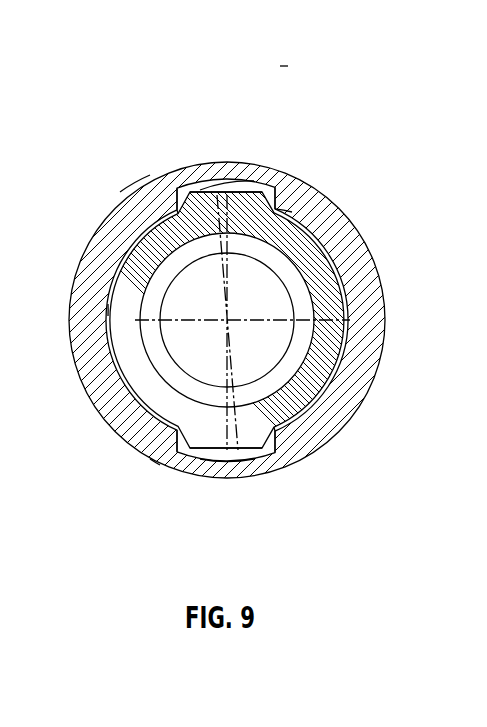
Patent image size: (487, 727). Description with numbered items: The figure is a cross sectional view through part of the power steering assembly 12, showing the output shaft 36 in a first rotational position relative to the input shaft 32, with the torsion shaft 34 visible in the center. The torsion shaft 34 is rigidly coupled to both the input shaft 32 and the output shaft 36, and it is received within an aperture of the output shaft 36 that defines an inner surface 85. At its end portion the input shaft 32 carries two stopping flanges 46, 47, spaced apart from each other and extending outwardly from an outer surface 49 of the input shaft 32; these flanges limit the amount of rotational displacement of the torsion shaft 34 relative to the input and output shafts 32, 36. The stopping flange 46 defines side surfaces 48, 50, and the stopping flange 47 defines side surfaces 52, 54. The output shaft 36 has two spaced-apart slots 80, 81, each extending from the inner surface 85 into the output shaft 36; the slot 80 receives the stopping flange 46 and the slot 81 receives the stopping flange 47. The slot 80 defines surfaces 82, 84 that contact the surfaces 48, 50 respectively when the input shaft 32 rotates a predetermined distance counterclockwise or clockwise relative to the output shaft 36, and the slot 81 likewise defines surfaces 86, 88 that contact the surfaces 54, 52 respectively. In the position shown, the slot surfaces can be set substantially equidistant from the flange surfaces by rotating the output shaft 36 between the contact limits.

The power steering assembly 12 is at (284, 64).
The input shaft 32 is at (341, 271).
The torsion shaft 34 is at (164, 356).
The output shaft 36 is at (132, 184).
The stopping flange 46 is at (216, 180).
The stopping flange 47 is at (232, 450).
The side surface 48 is at (177, 188).
The outer surface 49 is at (345, 357).
The side surface 50 is at (278, 188).
The side surface 52 is at (276, 452).
The side surface 54 is at (177, 461).
The slot 80 is at (254, 181).
The slot 81 is at (213, 461).
The surface 82 is at (176, 206).
The surface 84 is at (292, 203).
The inner surface 85 is at (110, 300).
The surface 86 is at (150, 459).
The surface 88 is at (277, 434).